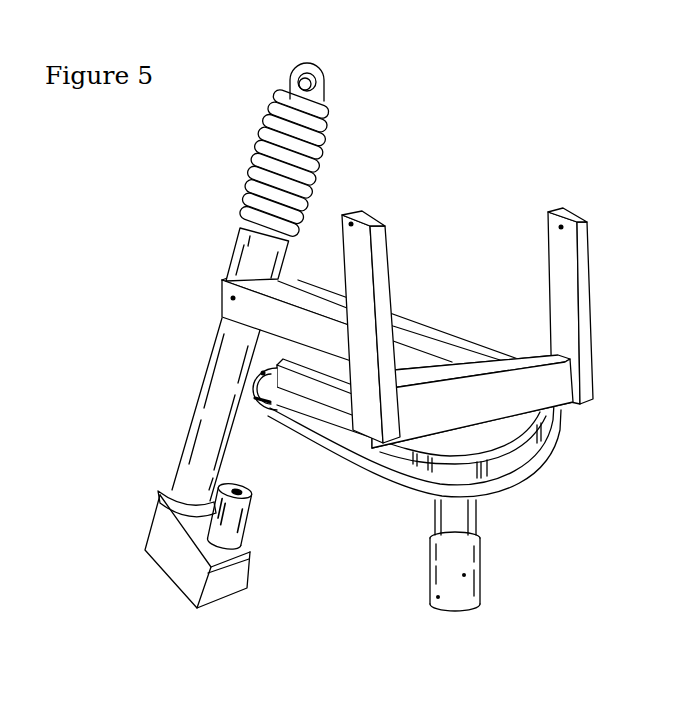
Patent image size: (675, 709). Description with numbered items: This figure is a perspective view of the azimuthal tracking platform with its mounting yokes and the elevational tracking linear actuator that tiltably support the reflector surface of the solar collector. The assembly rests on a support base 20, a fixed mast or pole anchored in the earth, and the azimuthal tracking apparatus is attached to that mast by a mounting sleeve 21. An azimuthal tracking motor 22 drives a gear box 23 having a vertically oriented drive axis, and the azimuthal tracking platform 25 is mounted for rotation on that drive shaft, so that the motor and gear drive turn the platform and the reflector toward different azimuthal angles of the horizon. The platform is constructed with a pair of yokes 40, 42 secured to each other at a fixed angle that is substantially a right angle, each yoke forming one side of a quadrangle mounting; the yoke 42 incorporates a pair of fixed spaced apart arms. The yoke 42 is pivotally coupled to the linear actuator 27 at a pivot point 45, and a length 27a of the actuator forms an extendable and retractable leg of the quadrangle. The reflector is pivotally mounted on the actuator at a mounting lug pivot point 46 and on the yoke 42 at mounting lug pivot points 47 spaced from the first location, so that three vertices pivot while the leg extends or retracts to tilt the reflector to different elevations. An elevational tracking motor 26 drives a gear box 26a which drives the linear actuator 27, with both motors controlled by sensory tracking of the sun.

The support base 20 is at (458, 613).
The mounting sleeve 21 is at (482, 560).
The azimuthal tracking motor 22 is at (262, 412).
The gear box 23 is at (553, 447).
The azimuthal tracking platform 25 is at (485, 397).
The elevational tracking motor 26 is at (258, 517).
The gear box 26a is at (185, 577).
The linear actuator 27 is at (190, 422).
The length of the linear actuator 27a is at (248, 178).
The yoke 40 is at (483, 345).
The yoke 42 is at (595, 312).
The pivot point 45 is at (231, 298).
The mounting lug pivot point 46 is at (320, 65).
The mounting lug pivot points 47 is at (363, 209).